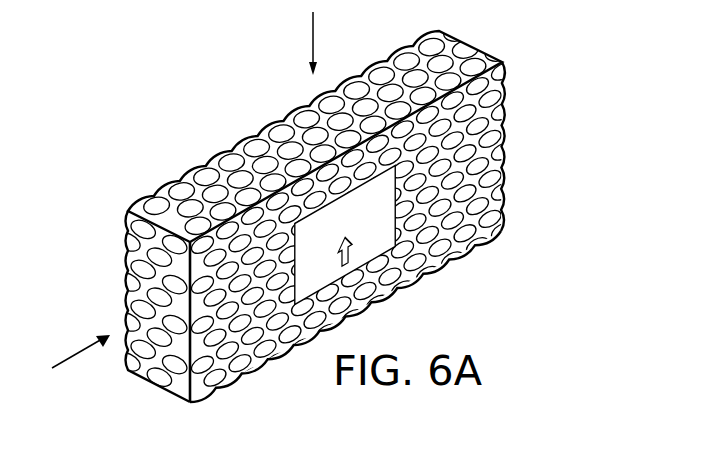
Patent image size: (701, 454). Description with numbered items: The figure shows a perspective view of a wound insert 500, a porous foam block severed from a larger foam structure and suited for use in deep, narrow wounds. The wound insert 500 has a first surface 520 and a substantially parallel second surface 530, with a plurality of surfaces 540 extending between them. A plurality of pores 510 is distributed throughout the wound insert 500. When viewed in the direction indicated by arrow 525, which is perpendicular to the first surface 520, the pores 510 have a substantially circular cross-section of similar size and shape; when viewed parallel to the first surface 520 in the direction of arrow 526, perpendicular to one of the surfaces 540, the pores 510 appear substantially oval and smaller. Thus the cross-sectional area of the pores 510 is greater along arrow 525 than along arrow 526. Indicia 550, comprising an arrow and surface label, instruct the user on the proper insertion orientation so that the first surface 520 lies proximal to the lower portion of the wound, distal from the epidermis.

The wound insert 500 is at (184, 87).
The pores 510 is at (128, 275).
The first surface 520 is at (287, 113).
The arrow 525 is at (311, 42).
The arrow 526 is at (75, 362).
The second surface 530 is at (480, 243).
The surfaces 540 is at (505, 132).
The indicia 550 is at (377, 250).